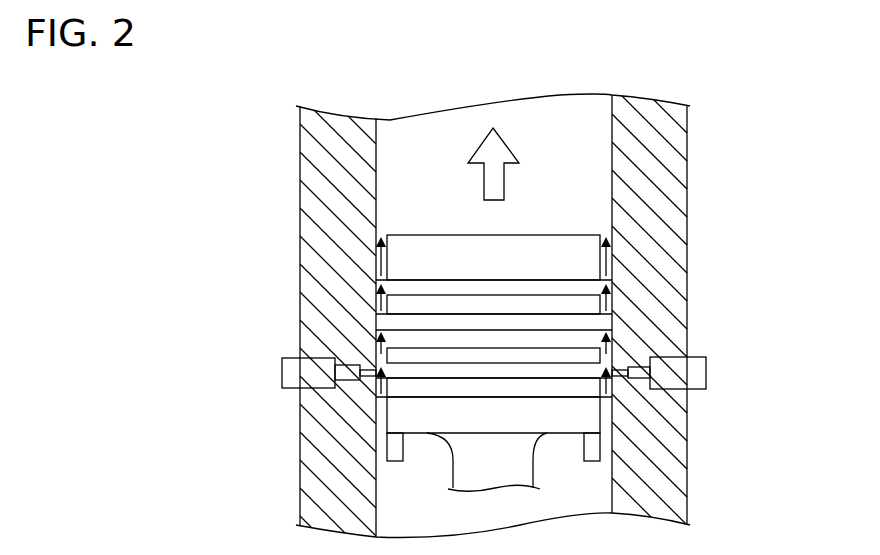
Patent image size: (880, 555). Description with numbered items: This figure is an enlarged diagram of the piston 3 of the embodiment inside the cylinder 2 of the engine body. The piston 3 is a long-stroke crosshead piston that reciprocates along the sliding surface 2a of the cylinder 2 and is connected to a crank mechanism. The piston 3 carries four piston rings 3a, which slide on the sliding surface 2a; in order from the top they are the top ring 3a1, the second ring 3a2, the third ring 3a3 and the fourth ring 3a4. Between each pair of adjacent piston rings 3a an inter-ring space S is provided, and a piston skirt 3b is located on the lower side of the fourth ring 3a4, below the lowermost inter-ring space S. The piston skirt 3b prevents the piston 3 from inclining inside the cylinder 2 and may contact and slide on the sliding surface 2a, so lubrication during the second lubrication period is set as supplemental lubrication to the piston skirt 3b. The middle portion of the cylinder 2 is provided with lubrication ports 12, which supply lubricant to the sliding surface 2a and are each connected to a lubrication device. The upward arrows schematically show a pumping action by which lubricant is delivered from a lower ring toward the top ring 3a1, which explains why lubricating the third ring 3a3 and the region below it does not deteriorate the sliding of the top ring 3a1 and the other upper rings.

The cylinder 2 is at (294, 136).
The sliding surface 2a is at (385, 500).
The piston 3 is at (442, 345).
The piston rings 3a is at (376, 337).
The top ring 3a1 is at (376, 282).
The second ring 3a2 is at (376, 323).
The third ring 3a3 is at (376, 357).
The fourth ring 3a4 is at (376, 390).
The piston skirt 3b is at (600, 447).
The inter-ring space S is at (366, 307).
The lubrication ports 12 is at (282, 370).